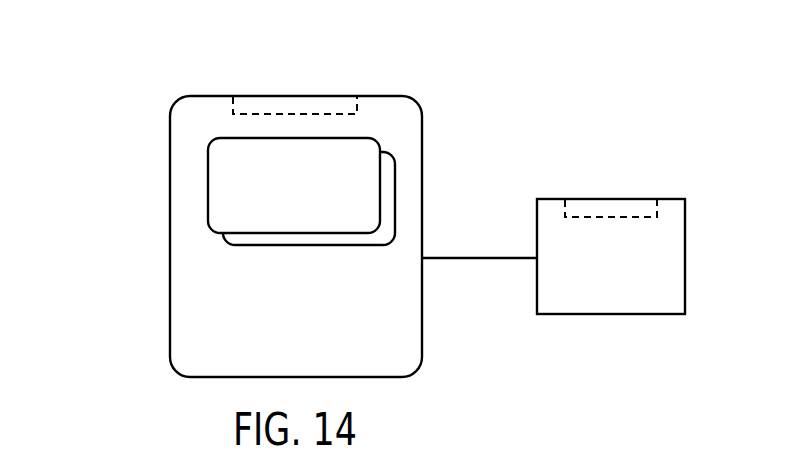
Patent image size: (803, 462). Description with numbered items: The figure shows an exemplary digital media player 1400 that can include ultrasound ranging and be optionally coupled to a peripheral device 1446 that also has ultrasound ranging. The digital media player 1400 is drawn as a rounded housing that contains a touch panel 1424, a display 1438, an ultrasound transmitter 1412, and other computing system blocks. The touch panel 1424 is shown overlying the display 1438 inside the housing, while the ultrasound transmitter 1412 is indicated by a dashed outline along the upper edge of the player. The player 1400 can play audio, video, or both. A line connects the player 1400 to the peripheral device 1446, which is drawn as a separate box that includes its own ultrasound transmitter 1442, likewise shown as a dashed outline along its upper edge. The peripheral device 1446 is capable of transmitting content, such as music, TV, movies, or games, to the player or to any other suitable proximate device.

The digital media player 1400 is at (170, 240).
The ultrasound transmitter 1412 is at (313, 107).
The touch panel 1424 is at (213, 232).
The display 1438 is at (395, 203).
The ultrasound transmitter 1442 is at (632, 208).
The peripheral device 1446 is at (588, 314).